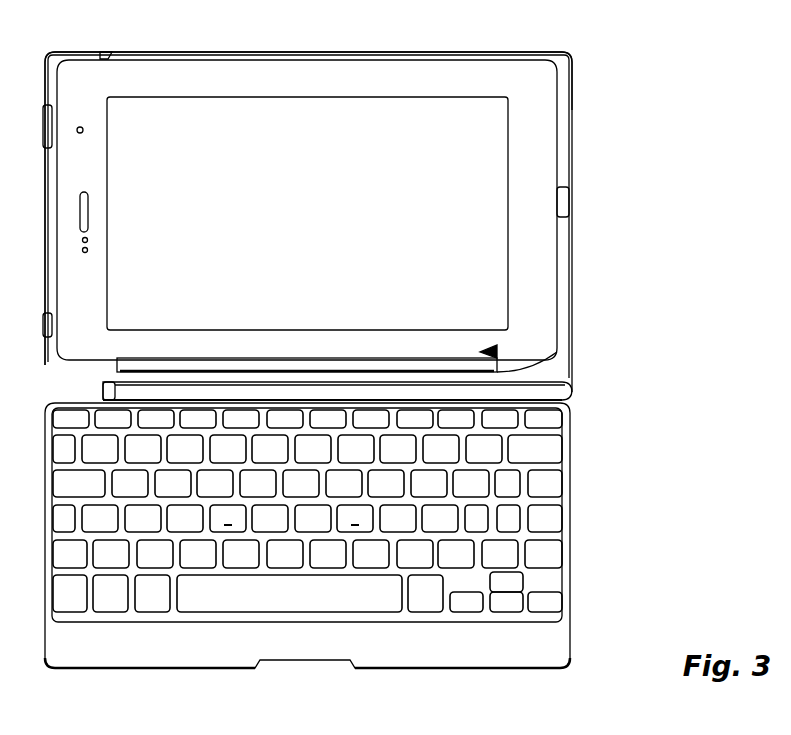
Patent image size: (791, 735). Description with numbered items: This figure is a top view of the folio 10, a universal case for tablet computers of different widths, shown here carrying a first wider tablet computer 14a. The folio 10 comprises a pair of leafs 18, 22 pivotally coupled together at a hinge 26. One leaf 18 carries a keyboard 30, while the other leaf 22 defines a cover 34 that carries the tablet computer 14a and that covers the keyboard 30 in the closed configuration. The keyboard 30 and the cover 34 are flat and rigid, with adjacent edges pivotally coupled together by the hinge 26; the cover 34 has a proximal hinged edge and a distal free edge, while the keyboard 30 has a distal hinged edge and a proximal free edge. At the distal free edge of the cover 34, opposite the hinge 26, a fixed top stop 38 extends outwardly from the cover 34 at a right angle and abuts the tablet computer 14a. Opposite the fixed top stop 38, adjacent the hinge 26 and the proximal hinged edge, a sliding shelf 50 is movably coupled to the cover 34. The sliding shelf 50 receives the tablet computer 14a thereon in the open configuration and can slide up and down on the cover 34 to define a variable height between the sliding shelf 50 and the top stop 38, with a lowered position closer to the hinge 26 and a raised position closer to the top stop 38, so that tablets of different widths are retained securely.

The folio 10 is at (611, 542).
The first wider tablet computer 14a is at (490, 240).
The leaf 18 is at (216, 668).
The leaf 22 is at (572, 105).
The hinge 26 is at (527, 372).
The keyboard 30 is at (345, 603).
The cover 34 is at (572, 175).
The fixed top stop 38 is at (527, 52).
The sliding shelf 50 is at (493, 357).